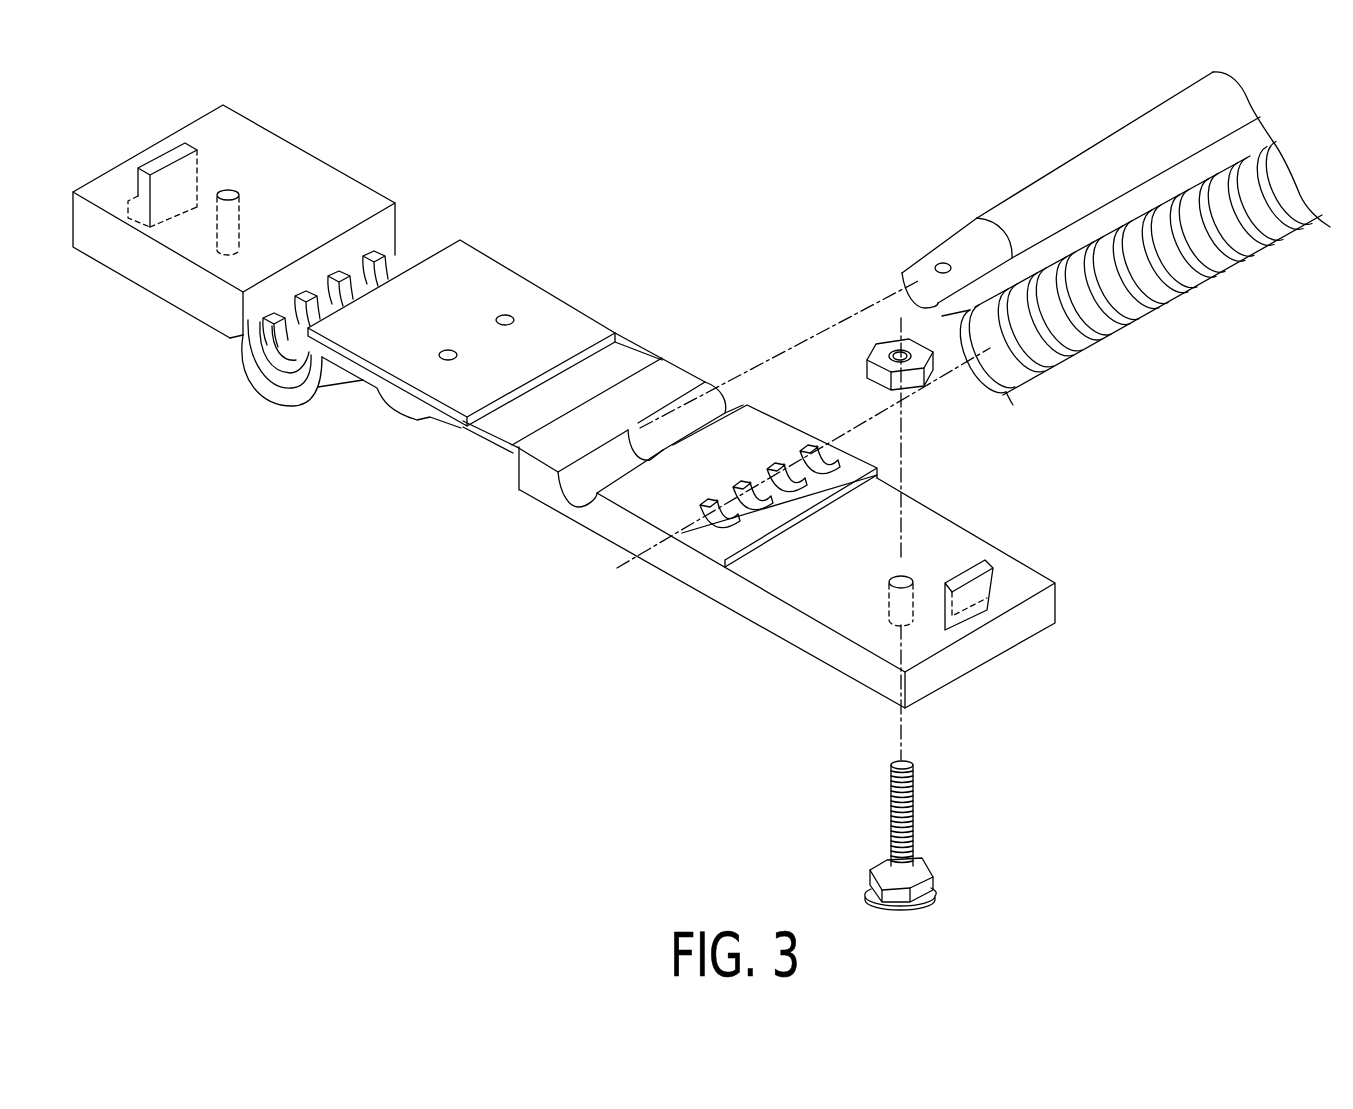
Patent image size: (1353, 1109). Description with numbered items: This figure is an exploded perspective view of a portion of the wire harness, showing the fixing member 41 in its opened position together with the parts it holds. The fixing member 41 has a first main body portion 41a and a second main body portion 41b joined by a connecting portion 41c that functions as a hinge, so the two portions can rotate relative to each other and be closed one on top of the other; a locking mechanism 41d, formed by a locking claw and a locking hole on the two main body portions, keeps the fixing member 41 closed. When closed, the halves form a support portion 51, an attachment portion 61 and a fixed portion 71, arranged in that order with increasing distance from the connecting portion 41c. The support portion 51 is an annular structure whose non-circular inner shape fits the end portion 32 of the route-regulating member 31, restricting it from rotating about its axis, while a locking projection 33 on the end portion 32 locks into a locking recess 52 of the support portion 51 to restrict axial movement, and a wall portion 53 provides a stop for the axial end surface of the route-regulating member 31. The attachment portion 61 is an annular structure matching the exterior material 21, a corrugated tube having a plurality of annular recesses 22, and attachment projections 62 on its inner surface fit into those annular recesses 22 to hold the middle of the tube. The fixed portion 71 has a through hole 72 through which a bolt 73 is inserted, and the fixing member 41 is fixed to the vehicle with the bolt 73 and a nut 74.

The exterior material 21 is at (1193, 290).
The annular recesses 22 is at (1137, 290).
The route-regulating member 31 is at (1103, 157).
The end portion 32 is at (937, 263).
The locking projection 33 is at (943, 262).
The fixing member 41 is at (653, 151).
The first main body portion 41a is at (818, 660).
The second main body portion 41b is at (140, 290).
The connecting portion 41c is at (480, 448).
The locking mechanism 41d is at (163, 158).
The support portion 51 is at (533, 285).
The locking recess 52 is at (443, 352).
The wall portion 53 is at (647, 427).
The attachment portion 61 is at (395, 203).
The attachment projections 62 is at (306, 291).
The fixed portion 71 is at (287, 152).
The through hole 72 is at (228, 190).
The bolt 73 is at (915, 818).
The nut 74 is at (915, 345).